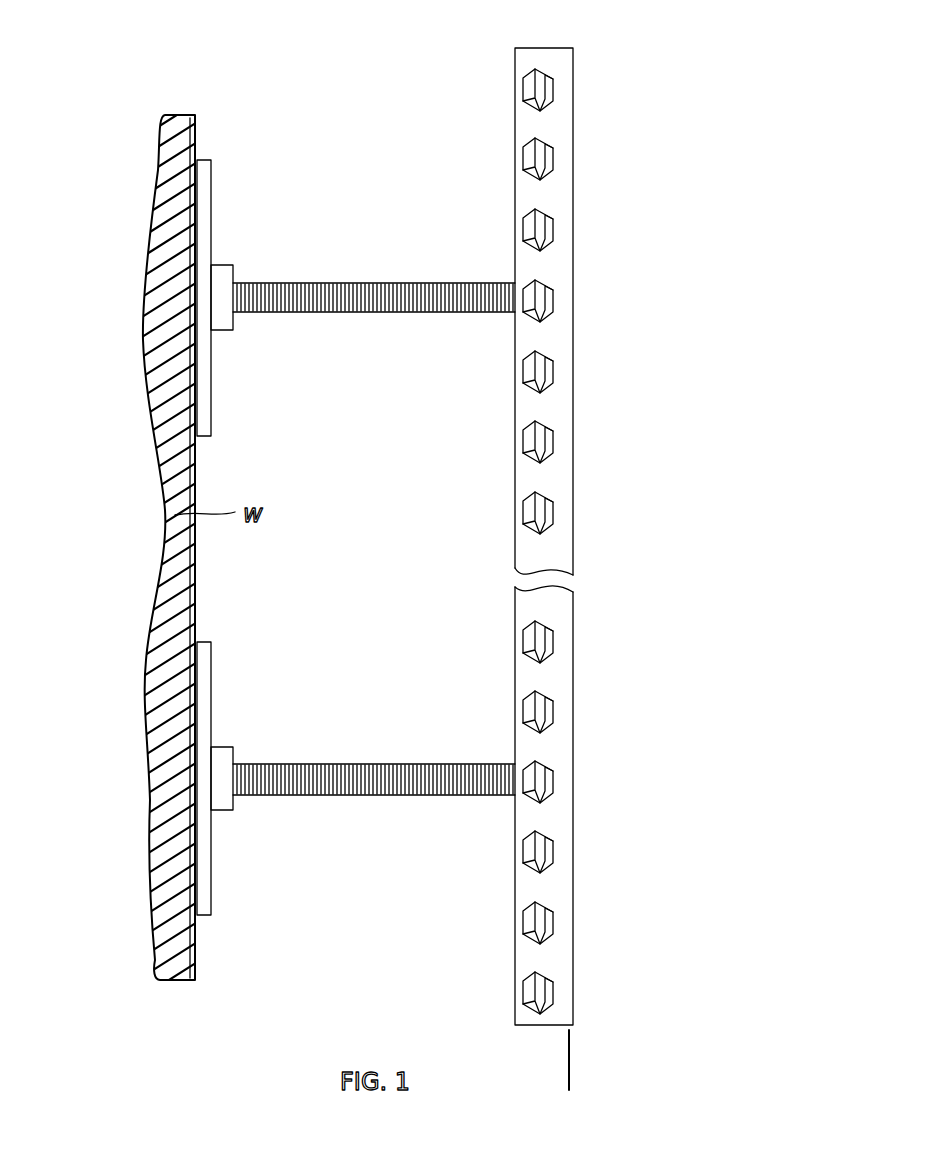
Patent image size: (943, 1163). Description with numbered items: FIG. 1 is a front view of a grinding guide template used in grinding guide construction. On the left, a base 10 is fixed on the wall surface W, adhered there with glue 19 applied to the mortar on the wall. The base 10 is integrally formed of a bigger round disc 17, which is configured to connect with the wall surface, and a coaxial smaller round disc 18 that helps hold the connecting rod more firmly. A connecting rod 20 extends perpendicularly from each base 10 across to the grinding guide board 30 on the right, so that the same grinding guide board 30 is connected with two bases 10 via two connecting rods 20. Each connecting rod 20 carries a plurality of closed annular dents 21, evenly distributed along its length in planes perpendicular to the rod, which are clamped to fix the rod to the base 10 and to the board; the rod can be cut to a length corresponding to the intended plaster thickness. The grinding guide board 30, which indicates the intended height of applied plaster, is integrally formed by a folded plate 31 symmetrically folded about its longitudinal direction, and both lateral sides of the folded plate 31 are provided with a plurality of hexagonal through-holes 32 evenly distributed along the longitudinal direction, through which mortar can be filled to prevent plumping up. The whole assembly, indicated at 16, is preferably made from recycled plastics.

The base 10 is at (180, 120).
The mounting assembly 16 is at (577, 5).
The bigger round disc 17 is at (200, 243).
The smaller round disc 18 is at (225, 318).
The glue 19 is at (197, 438).
The connecting rod 20 is at (440, 313).
The closed annular dents 21 is at (383, 290).
The grinding guide board 30 is at (619, 569).
The folded plate 31 is at (569, 313).
The through-holes 32 is at (555, 447).